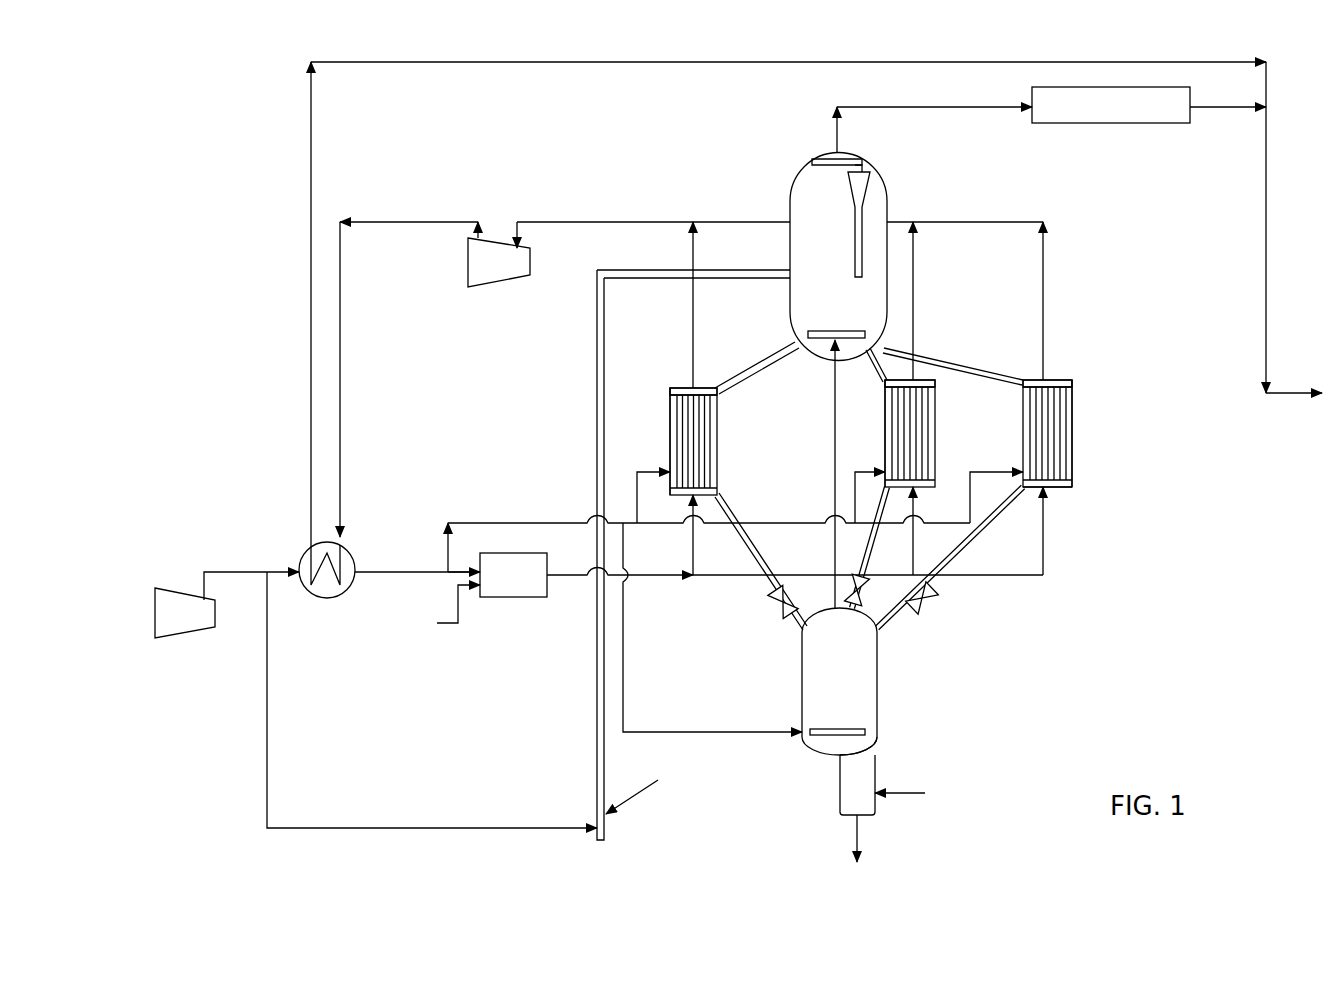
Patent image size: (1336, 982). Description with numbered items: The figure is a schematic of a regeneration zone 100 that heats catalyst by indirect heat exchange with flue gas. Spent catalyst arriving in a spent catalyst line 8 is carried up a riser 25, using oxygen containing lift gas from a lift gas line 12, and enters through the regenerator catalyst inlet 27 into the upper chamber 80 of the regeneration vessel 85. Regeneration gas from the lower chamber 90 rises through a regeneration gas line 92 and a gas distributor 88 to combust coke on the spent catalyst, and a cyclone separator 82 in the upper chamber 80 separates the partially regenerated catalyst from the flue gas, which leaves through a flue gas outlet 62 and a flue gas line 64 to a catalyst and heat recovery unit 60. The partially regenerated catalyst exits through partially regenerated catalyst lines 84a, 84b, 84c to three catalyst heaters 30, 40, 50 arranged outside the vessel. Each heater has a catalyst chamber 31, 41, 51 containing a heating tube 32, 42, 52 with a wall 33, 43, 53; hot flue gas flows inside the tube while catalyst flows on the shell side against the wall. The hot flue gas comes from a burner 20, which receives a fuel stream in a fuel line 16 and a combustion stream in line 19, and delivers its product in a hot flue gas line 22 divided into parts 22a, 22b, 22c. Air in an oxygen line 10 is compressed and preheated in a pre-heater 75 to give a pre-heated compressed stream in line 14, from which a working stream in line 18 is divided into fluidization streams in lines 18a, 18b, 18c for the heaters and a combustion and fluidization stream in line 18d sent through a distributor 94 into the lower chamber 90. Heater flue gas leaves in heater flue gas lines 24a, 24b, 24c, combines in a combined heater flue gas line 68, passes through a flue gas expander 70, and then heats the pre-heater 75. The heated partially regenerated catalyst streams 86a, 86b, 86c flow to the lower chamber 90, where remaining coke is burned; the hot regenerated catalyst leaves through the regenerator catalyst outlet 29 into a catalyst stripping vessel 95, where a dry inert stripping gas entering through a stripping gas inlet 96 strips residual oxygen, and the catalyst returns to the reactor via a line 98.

The regeneration zone 100 is at (150, 170).
The oxygen line 10 is at (160, 586).
The lift gas line 12 is at (266, 705).
The pre-heater 75 is at (305, 555).
The line 14 is at (430, 570).
The line 19 is at (458, 574).
The fuel line 16 is at (463, 610).
The burner 20 is at (528, 598).
The line 18 is at (465, 522).
The line 18a is at (658, 470).
The line 18b is at (870, 470).
The line 18c is at (990, 472).
The line 18d is at (625, 655).
The hot flue gas line 22 is at (549, 574).
The part of hot flue gas 22a is at (695, 560).
The part of hot flue gas 22b is at (917, 560).
The part of hot flue gas 22c is at (1048, 548).
The riser 25 is at (596, 757).
The regenerator catalyst inlet 27 is at (778, 278).
The spent catalyst line 8 is at (633, 797).
The catalyst heater 30 is at (720, 458).
The catalyst chamber 31 is at (667, 398).
The heating tube 32 is at (720, 425).
The wall 33 is at (720, 396).
The catalyst heater 40 is at (937, 425).
The catalyst chamber 41 is at (930, 388).
The heating tube 42 is at (933, 447).
The wall 43 is at (933, 404).
The catalyst heater 50 is at (1073, 465).
The catalyst chamber 51 is at (1072, 395).
The heating tube 52 is at (1073, 432).
The wall 53 is at (1073, 402).
The regeneration vessel 85 is at (1070, 348).
The upper chamber 80 is at (880, 170).
The cyclone separator 82 is at (852, 230).
The gas distributor 88 is at (825, 330).
The flue gas outlet 62 is at (830, 148).
The flue gas line 64 is at (955, 110).
The catalyst and heat recovery unit 60 is at (1097, 125).
The combined heater flue gas line 68 is at (560, 221).
The flue gas expander 70 is at (486, 287).
The heater flue gas line 24a is at (698, 258).
The heater flue gas line 24b is at (916, 270).
The heater flue gas line 24c is at (1046, 275).
The partially regenerated catalyst line 84a is at (748, 370).
The partially regenerated catalyst line 84b is at (866, 360).
The partially regenerated catalyst line 84c is at (985, 365).
The regeneration gas line 92 is at (833, 432).
The heated partially regenerated catalyst stream 86a is at (755, 588).
The heated partially regenerated catalyst stream 86b is at (872, 543).
The heated partially regenerated catalyst stream 86c is at (935, 582).
The lower chamber 90 is at (880, 715).
The regenerator catalyst outlet 29 is at (877, 748).
The distributor 94 is at (826, 729).
The catalyst stripping vessel 95 is at (878, 778).
The gas inlet line 96 is at (930, 793).
The line 98 is at (862, 836).